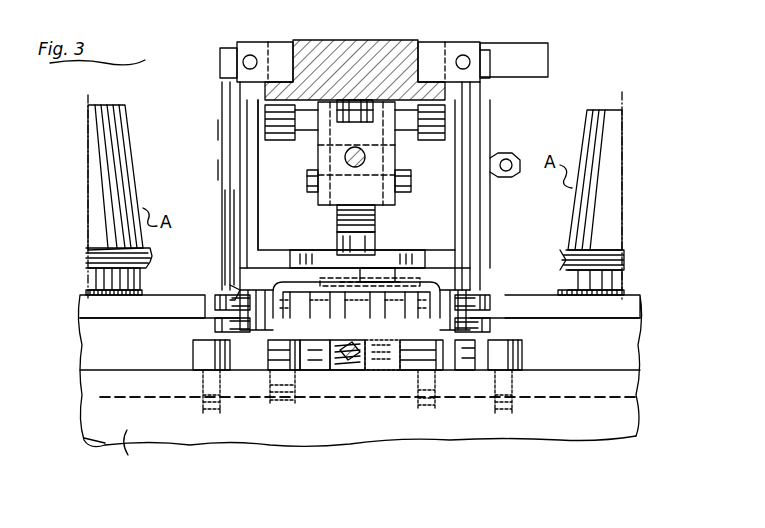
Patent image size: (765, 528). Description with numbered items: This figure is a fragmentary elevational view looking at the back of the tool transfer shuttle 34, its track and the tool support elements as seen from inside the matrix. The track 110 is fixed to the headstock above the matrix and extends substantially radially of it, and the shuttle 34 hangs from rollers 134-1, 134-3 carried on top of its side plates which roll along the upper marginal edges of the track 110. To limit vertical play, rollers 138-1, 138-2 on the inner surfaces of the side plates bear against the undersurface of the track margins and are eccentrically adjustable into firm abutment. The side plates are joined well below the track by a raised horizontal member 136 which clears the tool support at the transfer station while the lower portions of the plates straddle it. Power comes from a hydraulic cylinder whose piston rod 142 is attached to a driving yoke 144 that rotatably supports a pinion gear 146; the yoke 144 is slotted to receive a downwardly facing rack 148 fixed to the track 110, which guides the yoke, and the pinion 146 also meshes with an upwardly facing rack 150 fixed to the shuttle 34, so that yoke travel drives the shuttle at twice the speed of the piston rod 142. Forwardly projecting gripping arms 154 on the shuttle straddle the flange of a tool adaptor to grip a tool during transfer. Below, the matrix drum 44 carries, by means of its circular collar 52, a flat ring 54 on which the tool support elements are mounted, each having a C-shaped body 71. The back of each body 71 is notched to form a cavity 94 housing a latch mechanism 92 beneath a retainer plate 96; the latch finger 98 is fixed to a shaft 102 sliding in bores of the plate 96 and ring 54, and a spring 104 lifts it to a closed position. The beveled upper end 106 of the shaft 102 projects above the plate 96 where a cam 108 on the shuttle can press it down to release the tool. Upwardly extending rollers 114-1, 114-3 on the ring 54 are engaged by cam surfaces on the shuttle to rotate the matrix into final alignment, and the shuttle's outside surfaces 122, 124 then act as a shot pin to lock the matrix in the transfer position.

The roller 134-3 is at (288, 44).
The track 110 is at (306, 45).
The downwardly facing rack 148 is at (355, 100).
The roller 134-1 is at (428, 52).
The tool transfer shuttle 34 is at (226, 180).
The piston rod 142 is at (372, 158).
The roller 138-2 is at (292, 162).
The roller 138-1 is at (425, 158).
The driving yoke 144 is at (395, 200).
The pinion gear 146 is at (337, 216).
The upwardly facing rack 150 is at (340, 238).
The upper end of latch shaft 106 is at (332, 254).
The horizontal member 136 is at (288, 260).
The cam 108 is at (374, 278).
The shaft 102 is at (395, 276).
The latch mechanism 92 is at (393, 288).
The circular collar 52 is at (138, 452).
The matrix drum 44 is at (101, 437).
The flat ring 54 is at (104, 388).
The roller 114-3 is at (193, 352).
The roller 114-1 is at (522, 350).
The outside surface of shuttle 124 is at (212, 326).
The outside surface of shuttle 122 is at (508, 330).
The retainer plate 96 is at (325, 338).
The finger 98 is at (375, 342).
The cavity 94 is at (333, 370).
The spring 104 is at (352, 372).
The body 71 is at (380, 372).
The gripping arms 154 is at (250, 296).